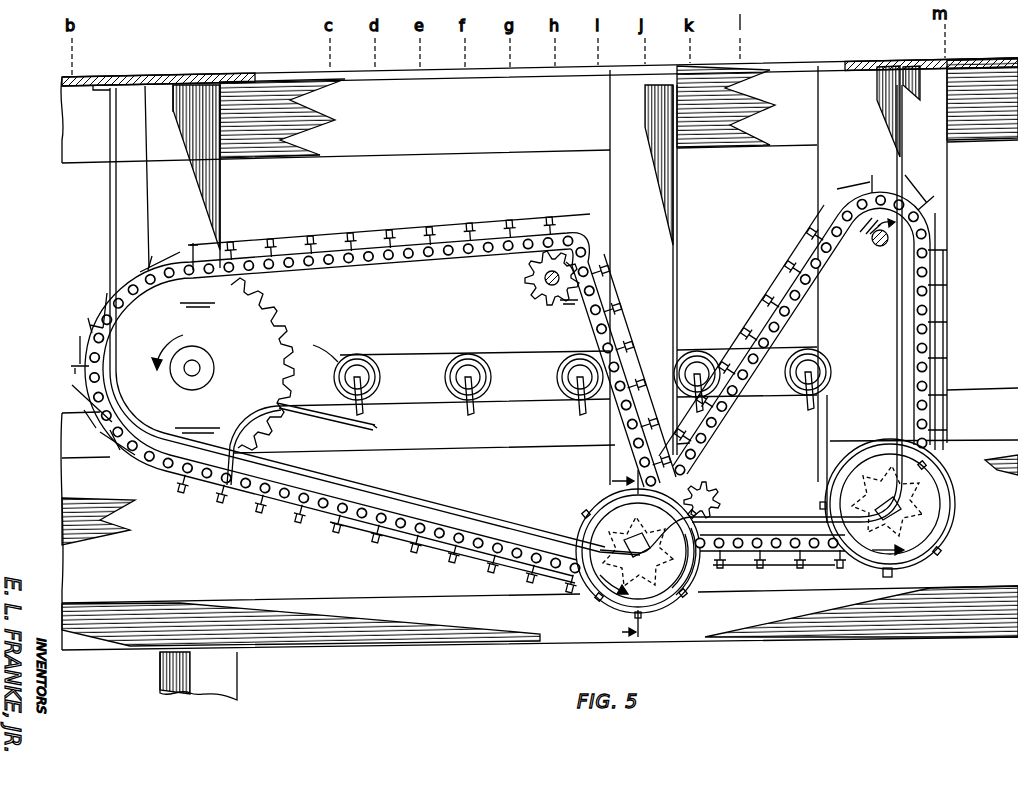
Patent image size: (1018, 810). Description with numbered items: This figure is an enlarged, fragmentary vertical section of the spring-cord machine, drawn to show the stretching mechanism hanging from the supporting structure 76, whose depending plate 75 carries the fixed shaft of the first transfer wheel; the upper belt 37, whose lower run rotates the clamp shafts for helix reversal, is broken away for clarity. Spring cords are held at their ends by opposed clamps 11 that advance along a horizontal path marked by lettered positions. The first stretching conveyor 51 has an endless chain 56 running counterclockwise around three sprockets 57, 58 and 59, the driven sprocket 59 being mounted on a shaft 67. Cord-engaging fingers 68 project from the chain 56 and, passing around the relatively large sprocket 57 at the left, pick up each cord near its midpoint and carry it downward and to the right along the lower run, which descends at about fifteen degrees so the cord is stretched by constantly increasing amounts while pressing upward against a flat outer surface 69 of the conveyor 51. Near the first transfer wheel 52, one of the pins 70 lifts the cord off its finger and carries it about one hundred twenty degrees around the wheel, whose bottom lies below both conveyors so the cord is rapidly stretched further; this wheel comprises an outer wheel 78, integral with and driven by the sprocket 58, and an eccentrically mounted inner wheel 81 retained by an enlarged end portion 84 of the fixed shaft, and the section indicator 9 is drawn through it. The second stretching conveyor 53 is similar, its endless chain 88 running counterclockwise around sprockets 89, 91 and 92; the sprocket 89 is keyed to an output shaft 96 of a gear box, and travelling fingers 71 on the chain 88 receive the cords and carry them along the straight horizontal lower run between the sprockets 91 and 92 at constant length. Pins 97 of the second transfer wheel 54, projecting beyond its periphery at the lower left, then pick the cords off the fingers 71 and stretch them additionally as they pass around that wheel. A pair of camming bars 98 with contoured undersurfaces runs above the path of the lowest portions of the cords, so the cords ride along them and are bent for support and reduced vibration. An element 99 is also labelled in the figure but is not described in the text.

The section line 9- 9 is at (618, 556).
The clamps 11 is at (422, 376).
The upper belt 37 is at (404, 352).
The first stretching conveyor 51 is at (232, 524).
The first transfer wheel 52 is at (603, 607).
The second stretching conveyor 53 is at (794, 388).
The second transfer wheel 54 is at (958, 520).
The endless chain 56 is at (326, 525).
The sprocket 57 is at (245, 296).
The sprocket 58 is at (638, 553).
The sprocket 59 is at (524, 290).
The shaft 67 is at (526, 276).
The cord-engaging fingers 68 is at (185, 483).
The flat outer surface 69 is at (470, 530).
The pins 70 is at (600, 598).
The travelling fingers 71 is at (758, 560).
The depending plate 75 is at (610, 175).
The supporting structure 76 is at (756, 52).
The outer wheel 78 is at (700, 588).
The inner wheel 81 is at (697, 562).
The enlarged end portion 84 is at (634, 538).
The endless chain 88 is at (756, 530).
The sprocket 89 is at (865, 267).
The sprocket 91 is at (700, 494).
The sprocket 92 is at (845, 483).
The output shaft 96 is at (874, 241).
The pins 97 is at (893, 572).
The camming bars 98 is at (384, 494).
The curved guide 99 is at (300, 405).